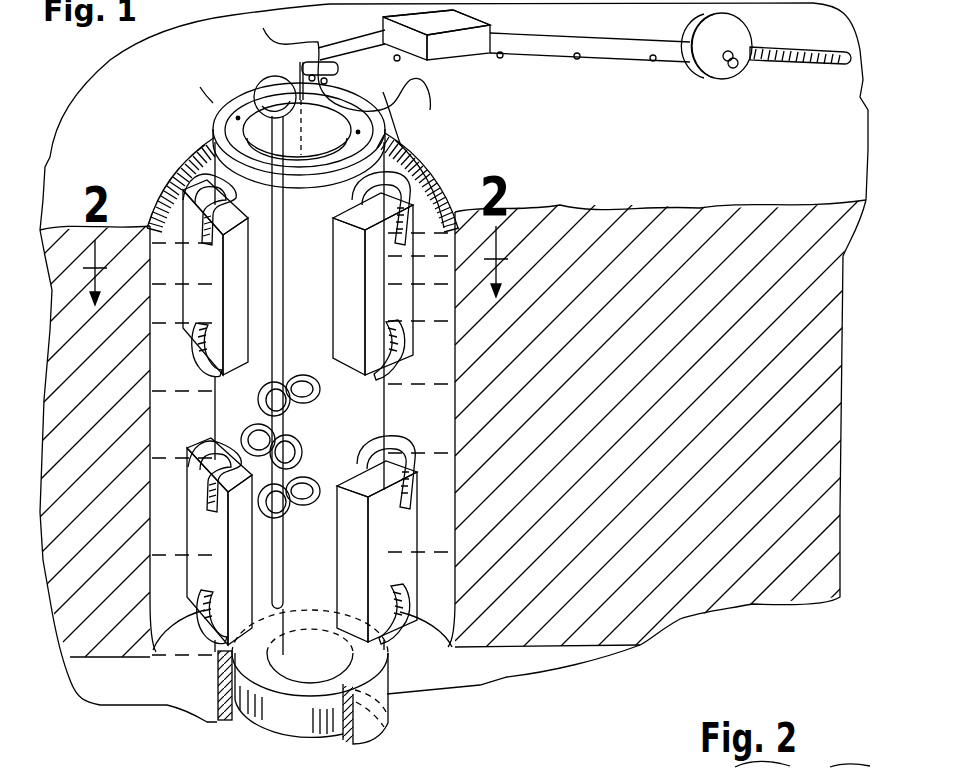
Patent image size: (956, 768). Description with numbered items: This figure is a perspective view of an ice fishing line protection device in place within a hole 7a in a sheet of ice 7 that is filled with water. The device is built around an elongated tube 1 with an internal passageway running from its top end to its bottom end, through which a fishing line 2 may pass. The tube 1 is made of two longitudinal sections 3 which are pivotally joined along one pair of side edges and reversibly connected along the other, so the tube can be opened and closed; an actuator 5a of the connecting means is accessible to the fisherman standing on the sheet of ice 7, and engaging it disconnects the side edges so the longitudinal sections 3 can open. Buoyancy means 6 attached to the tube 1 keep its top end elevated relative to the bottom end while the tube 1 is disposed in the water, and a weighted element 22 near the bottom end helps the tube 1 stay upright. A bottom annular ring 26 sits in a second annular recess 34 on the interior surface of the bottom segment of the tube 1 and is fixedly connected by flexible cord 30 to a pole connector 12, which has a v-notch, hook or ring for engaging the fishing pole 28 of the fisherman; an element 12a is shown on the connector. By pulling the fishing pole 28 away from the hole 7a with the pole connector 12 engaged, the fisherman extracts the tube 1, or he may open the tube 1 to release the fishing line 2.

The elongated tube 1 is at (387, 725).
The fishing line 2 is at (302, 60).
The longitudinal sections 3 is at (217, 424).
The actuator 5a is at (187, 157).
The buoyancy means 6 is at (249, 328).
The sheet of ice 7 is at (746, 166).
The hole 7a is at (430, 205).
The pole connector 12 is at (463, 61).
The housing cover 12a is at (470, 23).
The weighted element 22 is at (268, 728).
The bottom annular ring 26 is at (325, 733).
The fishing pole 28 is at (692, 80).
The flexible cord 30 is at (238, 118).
The second annular recess 34 is at (242, 722).